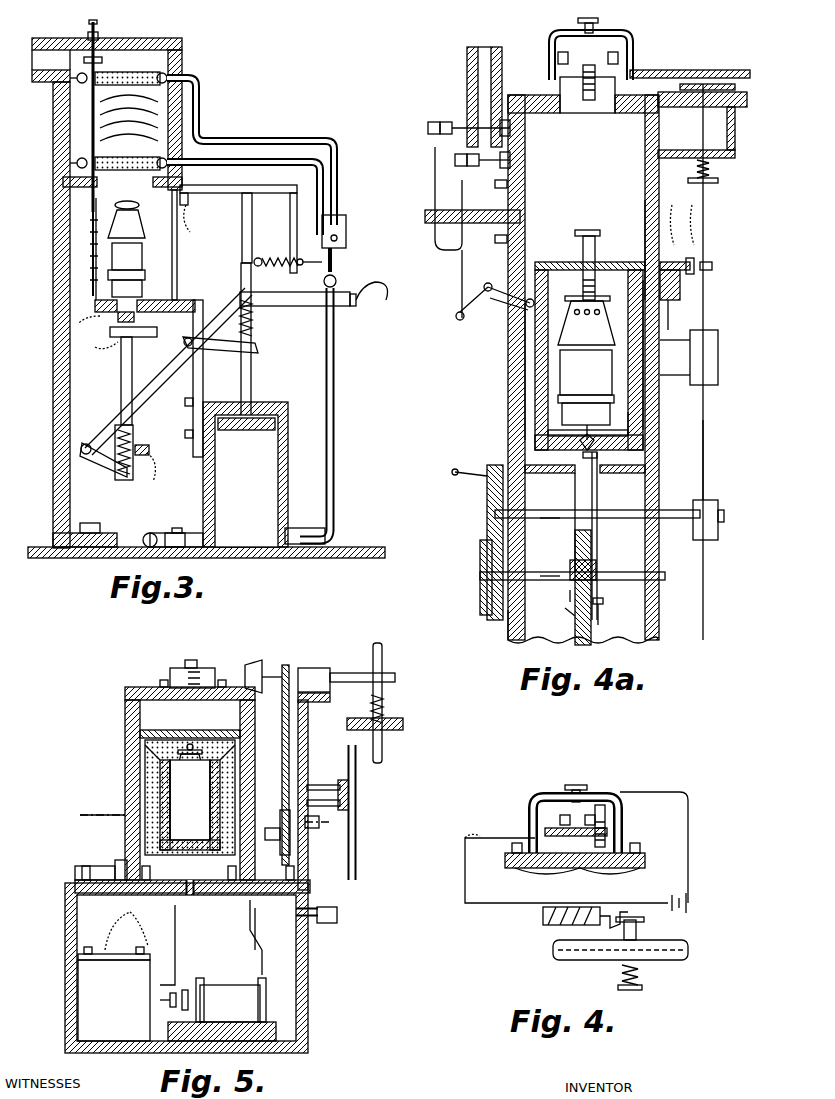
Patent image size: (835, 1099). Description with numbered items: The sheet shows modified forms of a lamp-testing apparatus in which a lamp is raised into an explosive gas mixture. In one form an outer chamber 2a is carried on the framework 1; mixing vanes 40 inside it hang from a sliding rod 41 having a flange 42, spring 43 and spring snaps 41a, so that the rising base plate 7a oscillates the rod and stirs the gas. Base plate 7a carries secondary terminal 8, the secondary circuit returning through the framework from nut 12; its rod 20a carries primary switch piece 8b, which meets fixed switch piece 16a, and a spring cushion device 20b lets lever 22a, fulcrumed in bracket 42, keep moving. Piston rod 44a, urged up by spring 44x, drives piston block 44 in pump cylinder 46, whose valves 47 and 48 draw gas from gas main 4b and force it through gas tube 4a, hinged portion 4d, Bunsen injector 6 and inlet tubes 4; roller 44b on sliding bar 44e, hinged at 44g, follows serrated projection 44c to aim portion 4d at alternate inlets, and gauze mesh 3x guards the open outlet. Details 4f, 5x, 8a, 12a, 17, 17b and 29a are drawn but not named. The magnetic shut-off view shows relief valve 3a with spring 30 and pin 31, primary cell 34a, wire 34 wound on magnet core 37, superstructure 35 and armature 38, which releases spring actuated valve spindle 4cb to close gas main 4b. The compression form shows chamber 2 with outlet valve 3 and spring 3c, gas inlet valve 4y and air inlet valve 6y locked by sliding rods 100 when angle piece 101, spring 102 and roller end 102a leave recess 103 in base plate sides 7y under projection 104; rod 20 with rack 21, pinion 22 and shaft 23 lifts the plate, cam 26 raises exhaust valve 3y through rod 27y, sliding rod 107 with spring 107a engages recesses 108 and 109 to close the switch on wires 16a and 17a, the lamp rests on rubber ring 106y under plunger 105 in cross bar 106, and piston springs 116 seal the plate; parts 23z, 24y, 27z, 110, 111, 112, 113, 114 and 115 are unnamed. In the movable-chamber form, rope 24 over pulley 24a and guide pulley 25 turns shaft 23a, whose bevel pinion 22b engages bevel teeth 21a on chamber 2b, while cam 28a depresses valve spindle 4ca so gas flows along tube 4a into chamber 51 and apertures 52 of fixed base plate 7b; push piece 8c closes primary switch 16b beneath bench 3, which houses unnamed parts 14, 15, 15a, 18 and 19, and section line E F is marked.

In FIG. 4a, the bench bracket or framework 1 is at (510, 622).
In FIG. 5, the bench bracket or framework 1 is at (308, 748).
In FIG. 4a, the outer chamber 2 is at (648, 190).
In FIG. 3, the outer chamber 2a is at (53, 138).
In FIG. 5, the upper chamber 2b is at (126, 726).
In FIG. 4a, the outlet valve 3 is at (702, 125).
In FIG. 5, the outlet valve 3 is at (290, 988).
In FIG. 4a, the relief valve 3a is at (590, 113).
In FIG. 5, the relief valve 3a is at (170, 680).
In FIG. 4, the relief valve 3a is at (545, 866).
In FIG. 4a, the spring 3c is at (712, 172).
In FIG. 3, the gauze mesh 3x is at (107, 114).
In FIG. 4, the gauze mesh 3x is at (590, 868).
In FIG. 4a, the exhaust valve 3y is at (690, 78).
In FIG. 3, the gas mixture inlet tubes 4 is at (205, 158).
In FIG. 3, the gas tube 4a is at (336, 482).
In FIG. 5, the gas tube 4a is at (358, 858).
In FIG. 4, the gas tube 4a is at (598, 960).
In FIG. 3, the gas main 4b is at (146, 534).
In FIG. 4a, the gas main 4b is at (466, 84).
In FIG. 5, the gas main 4b is at (403, 728).
In FIG. 5, the valve spindle 4ca is at (384, 704).
In FIG. 4, the spring actuated valve spindle 4cb is at (637, 930).
In FIG. 3, the gas tube portion 4d is at (337, 282).
In FIG. 3, the cylinder 4f is at (268, 464).
In FIG. 4a, the gas inlet valve 4y is at (496, 126).
In FIG. 3, the pipe 5x is at (190, 76).
In FIG. 3, the Bunsen air injector 6 is at (346, 240).
In FIG. 5, the Bunsen air injector 6 is at (328, 924).
In FIG. 4a, the air inlet valve 6y is at (510, 162).
In FIG. 3, the base plate 7a is at (180, 304).
In FIG. 5, the base plate 7b is at (140, 758).
In FIG. 4a, the base plate sides 7y is at (640, 406).
In FIG. 3, the secondary terminal 8 is at (135, 318).
In FIG. 3, the wire 8a is at (92, 318).
In FIG. 3, the primary switch piece 8b is at (150, 450).
In FIG. 5, the push piece 8c is at (250, 920).
In FIG. 3, the nut 12 is at (190, 198).
In FIG. 3, the wire 12a is at (192, 232).
In FIG. 5, the wire 12a is at (177, 942).
In FIG. 5, the coil 14 is at (222, 1009).
In FIG. 4, the contact 15 is at (465, 876).
In FIG. 5, the wire 15a is at (260, 960).
In FIG. 3, the primary switch piece 16a is at (148, 340).
In FIG. 4a, the primary switch piece 16a is at (696, 236).
In FIG. 5, the primary switch 16b is at (92, 866).
In FIG. 3, the wire 17 is at (154, 478).
In FIG. 5, the wire 17 is at (142, 930).
In FIG. 4a, the wire 17a is at (670, 212).
In FIG. 3, the wire 17b is at (99, 350).
In FIG. 5, the wire 17b is at (111, 931).
In FIG. 5, the battery 18 is at (114, 994).
In FIG. 5, the switch 19 is at (160, 996).
In FIG. 4a, the rod 20 is at (570, 596).
In FIG. 3, the rod 20a is at (121, 382).
In FIG. 3, the spring cushion device 20b is at (112, 440).
In FIG. 4a, the toothed rack 21 is at (575, 612).
In FIG. 5, the bevel teeth 21a is at (126, 692).
In FIG. 4a, the pinion 22 is at (594, 566).
In FIG. 3, the lever 22a is at (315, 299).
In FIG. 5, the bevel pinion 22b is at (255, 664).
In FIG. 4a, the shaft 23 is at (560, 574).
In FIG. 5, the shaft 23a is at (394, 678).
In FIG. 4a, the shaft 23z is at (555, 518).
In FIG. 5, the endless rope 24 is at (282, 754).
In FIG. 5, the pulley 24a is at (312, 670).
In FIG. 4a, the gear 24y is at (480, 594).
In FIG. 5, the guide pulley 25 is at (282, 845).
In FIG. 4a, the cam 26 is at (712, 532).
In FIG. 4a, the rod 27y is at (706, 212).
In FIG. 4a, the rack 27z is at (486, 524).
In FIG. 5, the cam 28a is at (382, 654).
In FIG. 3, the hose 29a is at (383, 301).
In FIG. 4, the spring 30 is at (545, 831).
In FIG. 4, the upstanding pin 31 is at (560, 812).
In FIG. 4, the wire 34 is at (690, 840).
In FIG. 4, the primary cell 34a is at (686, 893).
In FIG. 4, the superstructure 35 is at (565, 790).
In FIG. 4, the magnet core 37 is at (543, 914).
In FIG. 4, the armature 38 is at (605, 926).
In FIG. 3, the mixing vanes 40 is at (125, 118).
In FIG. 3, the sliding rod 41 is at (95, 30).
In FIG. 3, the spring snaps 41a is at (90, 256).
In FIG. 3, the flange 42 is at (101, 60).
In FIG. 3, the spring 43 is at (100, 34).
In FIG. 3, the piston block 44 is at (250, 431).
In FIG. 3, the piston rod 44a is at (252, 387).
In FIG. 3, the roller 44b is at (260, 257).
In FIG. 3, the serrated projection 44c is at (253, 212).
In FIG. 3, the sliding bar 44e is at (295, 266).
In FIG. 3, the hinge 44g is at (334, 258).
In FIG. 3, the spring 44x is at (253, 318).
In FIG. 4, the pump cylinder 46 is at (655, 960).
In FIG. 3, the valve 47 is at (185, 532).
In FIG. 3, the valve 48 is at (302, 528).
In FIG. 5, the chamber 51 is at (236, 808).
In FIG. 5, the apertures 52 is at (192, 738).
In FIG. 4a, the sliding rods 100 is at (435, 236).
In FIG. 4a, the angle piece 101 is at (470, 306).
In FIG. 4a, the spring 102 is at (505, 306).
In FIG. 4a, the roller end 102a is at (528, 310).
In FIG. 4a, the recess 103 is at (527, 358).
In FIG. 4a, the projection 104 is at (555, 432).
In FIG. 4a, the sliding plunger 105 is at (594, 236).
In FIG. 4a, the cross bar 106 is at (616, 264).
In FIG. 4a, the soft rubber ring 106y is at (580, 446).
In FIG. 4a, the sliding rod 107 is at (690, 282).
In FIG. 4a, the spring 107a is at (678, 312).
In FIG. 4a, the recess 108 is at (712, 266).
In FIG. 4a, the recess 109 is at (640, 418).
In FIG. 4a, the rod 110 is at (705, 458).
In FIG. 4a, the partition 111 is at (550, 461).
In FIG. 4a, the partition 112 is at (597, 455).
In FIG. 4a, the rod 113 is at (600, 486).
In FIG. 4a, the rod 114 is at (575, 478).
In FIG. 4a, the catch 115 is at (603, 604).
In FIG. 4a, the piston springs 116 is at (538, 262).
In FIG. 5, the section line E is at (97, 815).
In FIG. 5, the section line F is at (327, 804).